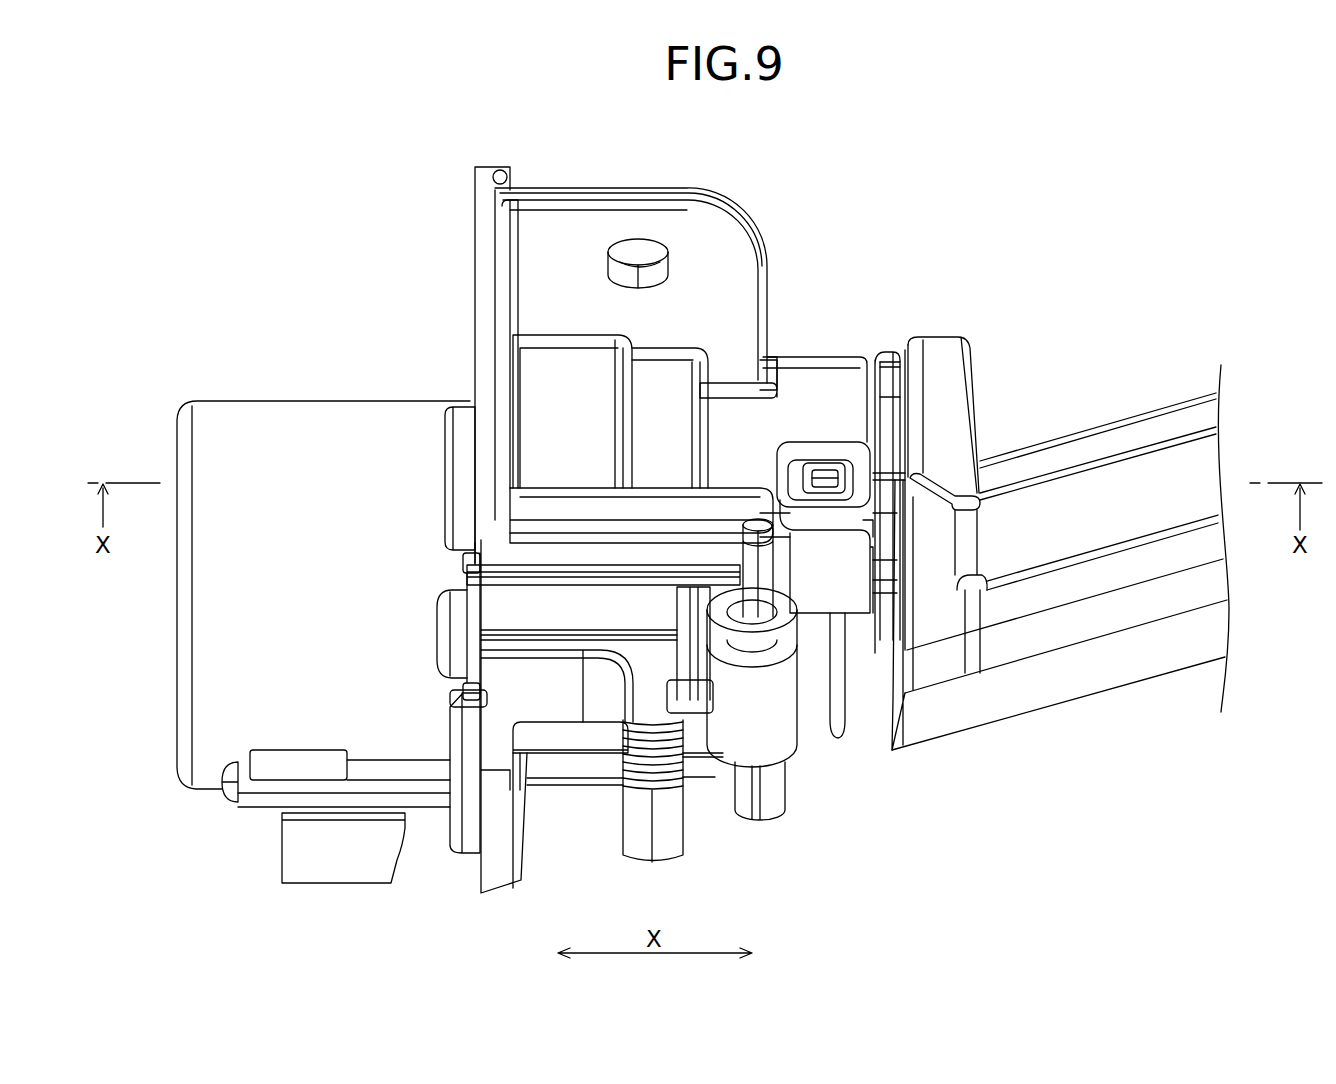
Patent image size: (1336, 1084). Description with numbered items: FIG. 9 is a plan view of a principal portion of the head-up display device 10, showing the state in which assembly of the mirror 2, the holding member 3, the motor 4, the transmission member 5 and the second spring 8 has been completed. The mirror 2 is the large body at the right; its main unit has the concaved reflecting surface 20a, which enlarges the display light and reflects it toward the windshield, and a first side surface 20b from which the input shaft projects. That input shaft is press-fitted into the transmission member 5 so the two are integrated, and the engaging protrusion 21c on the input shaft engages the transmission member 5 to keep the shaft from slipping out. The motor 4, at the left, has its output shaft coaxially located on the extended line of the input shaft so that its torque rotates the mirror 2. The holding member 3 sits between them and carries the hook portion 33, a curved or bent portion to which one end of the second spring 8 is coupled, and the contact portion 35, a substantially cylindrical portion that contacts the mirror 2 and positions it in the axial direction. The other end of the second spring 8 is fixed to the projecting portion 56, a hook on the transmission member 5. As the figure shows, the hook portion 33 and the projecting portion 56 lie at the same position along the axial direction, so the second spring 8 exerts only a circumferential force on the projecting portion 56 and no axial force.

The mirror 2 is at (1108, 413).
The holding member 3 is at (592, 191).
The motor 4 is at (237, 400).
The transmission member 5 is at (850, 447).
The second spring 8 is at (805, 690).
The head-up display device 10 is at (780, 154).
The reflecting surface 20a is at (1132, 664).
The first side surface 20b is at (893, 362).
The engaging protrusion 21c is at (822, 474).
The hook portion 33 is at (740, 612).
The contact portion 35 is at (850, 602).
The projecting portion 56 is at (767, 798).